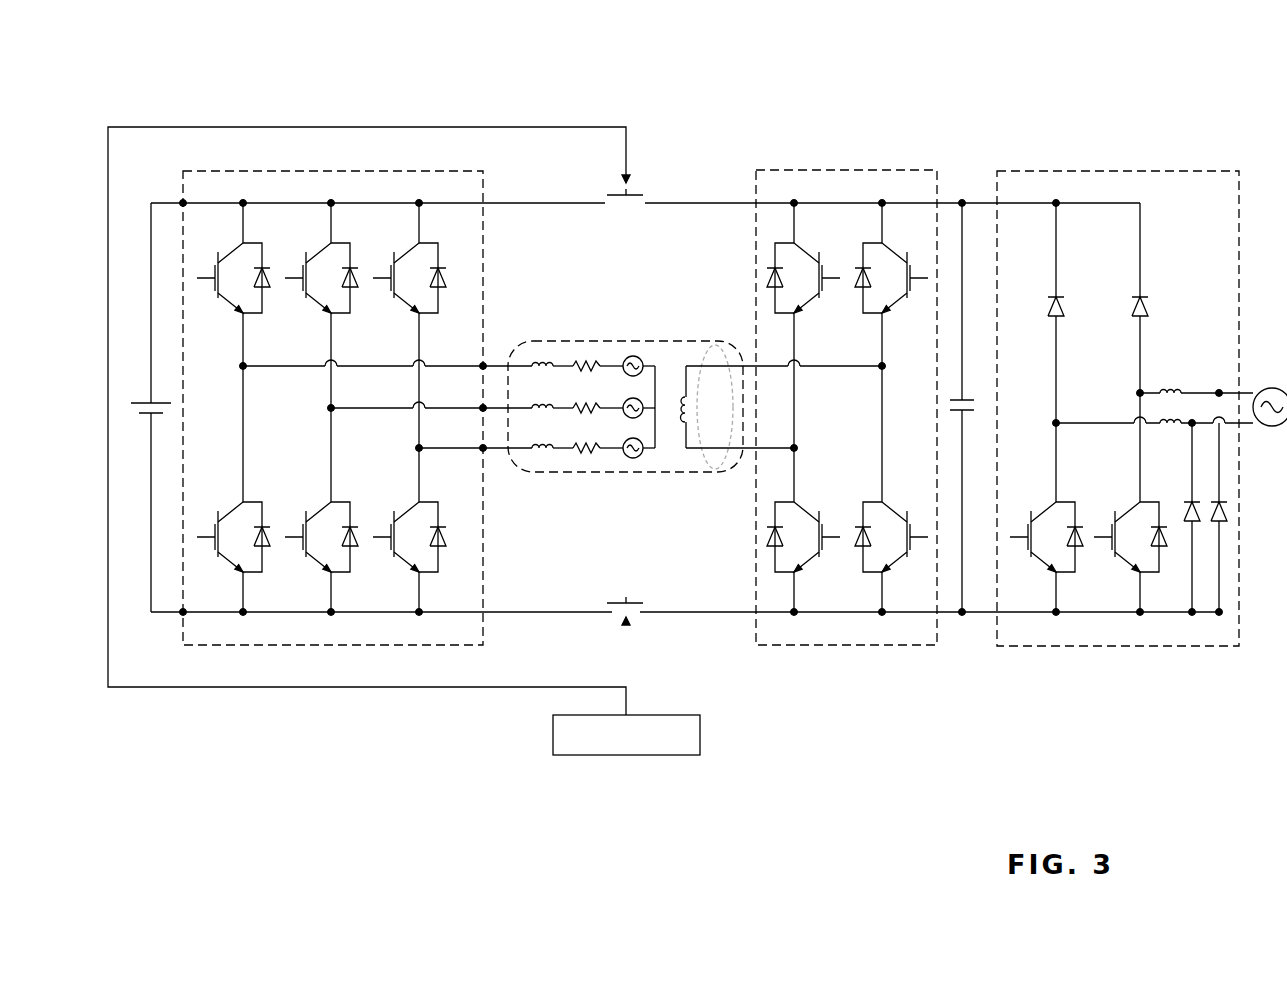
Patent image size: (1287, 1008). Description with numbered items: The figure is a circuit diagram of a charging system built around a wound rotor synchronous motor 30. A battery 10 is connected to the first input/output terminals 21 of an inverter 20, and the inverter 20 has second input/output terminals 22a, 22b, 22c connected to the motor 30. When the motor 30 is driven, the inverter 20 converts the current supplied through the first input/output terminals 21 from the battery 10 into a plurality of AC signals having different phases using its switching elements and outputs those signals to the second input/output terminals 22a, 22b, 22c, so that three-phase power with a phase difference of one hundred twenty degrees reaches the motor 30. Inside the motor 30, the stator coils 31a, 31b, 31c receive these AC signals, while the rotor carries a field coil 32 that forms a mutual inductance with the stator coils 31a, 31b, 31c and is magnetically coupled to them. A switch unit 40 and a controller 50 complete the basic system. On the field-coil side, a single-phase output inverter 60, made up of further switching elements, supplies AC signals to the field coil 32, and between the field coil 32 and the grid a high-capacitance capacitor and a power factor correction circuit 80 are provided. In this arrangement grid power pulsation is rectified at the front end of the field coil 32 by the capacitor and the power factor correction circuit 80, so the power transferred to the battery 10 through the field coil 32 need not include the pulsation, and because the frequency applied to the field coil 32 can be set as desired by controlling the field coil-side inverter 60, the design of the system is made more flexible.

The battery 10 is at (145, 403).
The inverter 20 is at (331, 352).
The first input/output terminals 21 is at (183, 203).
The second input/output terminal 22a is at (483, 366).
The second input/output terminal 22b is at (483, 408).
The second input/output terminal 22c is at (483, 448).
The wound rotor synchronous motor 30 is at (653, 398).
The stator coil 31a is at (543, 360).
The stator coil 31b is at (535, 404).
The stator coil 31c is at (548, 455).
The field coil 32 is at (686, 420).
The switch unit 40 is at (642, 193).
The controller 50 is at (700, 738).
The single-phase output inverter 60 is at (846, 373).
The power factor correction circuit 80 is at (1142, 373).